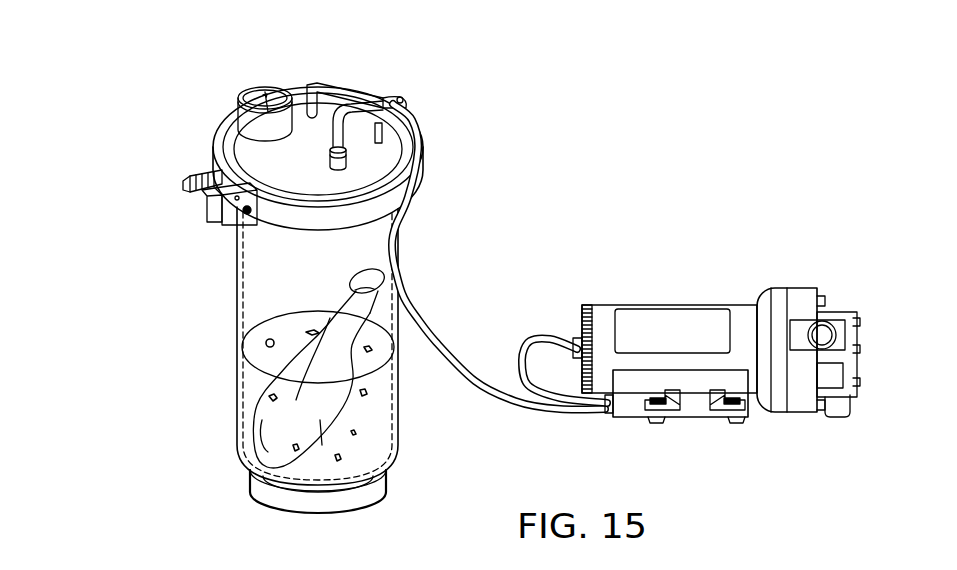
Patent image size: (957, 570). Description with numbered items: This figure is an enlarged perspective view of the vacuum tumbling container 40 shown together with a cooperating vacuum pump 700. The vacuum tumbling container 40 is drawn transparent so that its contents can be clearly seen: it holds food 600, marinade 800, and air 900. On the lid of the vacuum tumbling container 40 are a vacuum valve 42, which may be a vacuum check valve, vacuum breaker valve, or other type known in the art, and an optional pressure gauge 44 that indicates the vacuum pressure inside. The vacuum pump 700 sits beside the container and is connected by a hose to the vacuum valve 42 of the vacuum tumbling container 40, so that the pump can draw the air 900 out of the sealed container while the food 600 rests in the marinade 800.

The vacuum tumbling container 40 is at (145, 84).
The vacuum valve 42 is at (327, 163).
The pressure gauge 44 is at (280, 92).
The food 600 is at (383, 340).
The vacuum pump 700 is at (665, 258).
The marinade 800 is at (378, 418).
The air 900 is at (263, 265).